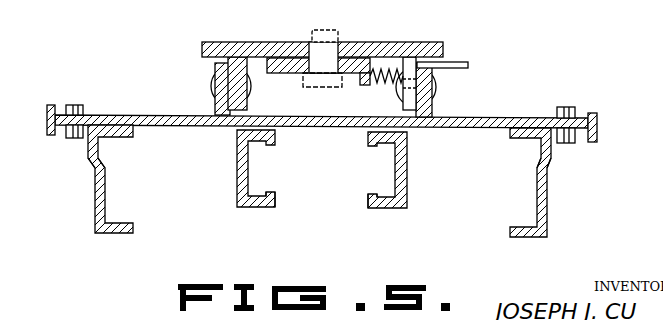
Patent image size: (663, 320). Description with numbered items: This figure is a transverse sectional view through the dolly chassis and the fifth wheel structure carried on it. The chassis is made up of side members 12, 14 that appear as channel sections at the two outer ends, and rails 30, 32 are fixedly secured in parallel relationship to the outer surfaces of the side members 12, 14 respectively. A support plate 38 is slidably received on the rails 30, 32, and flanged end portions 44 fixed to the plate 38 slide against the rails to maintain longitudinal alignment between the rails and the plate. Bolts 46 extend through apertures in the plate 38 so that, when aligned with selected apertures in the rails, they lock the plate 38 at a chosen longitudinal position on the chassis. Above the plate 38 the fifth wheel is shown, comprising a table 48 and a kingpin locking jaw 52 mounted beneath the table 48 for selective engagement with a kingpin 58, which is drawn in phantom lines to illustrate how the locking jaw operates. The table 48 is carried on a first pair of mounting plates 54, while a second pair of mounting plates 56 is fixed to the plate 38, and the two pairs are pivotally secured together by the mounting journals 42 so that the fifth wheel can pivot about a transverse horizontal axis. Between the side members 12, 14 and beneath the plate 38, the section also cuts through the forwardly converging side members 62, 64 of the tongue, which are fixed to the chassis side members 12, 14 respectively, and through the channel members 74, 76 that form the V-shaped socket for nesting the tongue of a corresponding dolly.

The side member 12 is at (545, 182).
The side member 14 is at (103, 179).
The rail 30 is at (555, 163).
The rail 32 is at (90, 160).
The support plate 38 is at (512, 118).
The mounting journals 42 is at (212, 80).
The flanged end portions 44 is at (48, 127).
The bolts 46 is at (80, 104).
The table 48 is at (441, 44).
The kingpin locking jaw 52 is at (352, 57).
The first pair of mounting plates 54 is at (248, 100).
The second pair of mounting plates 56 is at (215, 97).
The kingpin 58 is at (324, 30).
The side member of tongue 62 is at (370, 197).
The side member of tongue 64 is at (270, 200).
The channel member 74 is at (398, 191).
The channel member 76 is at (253, 186).